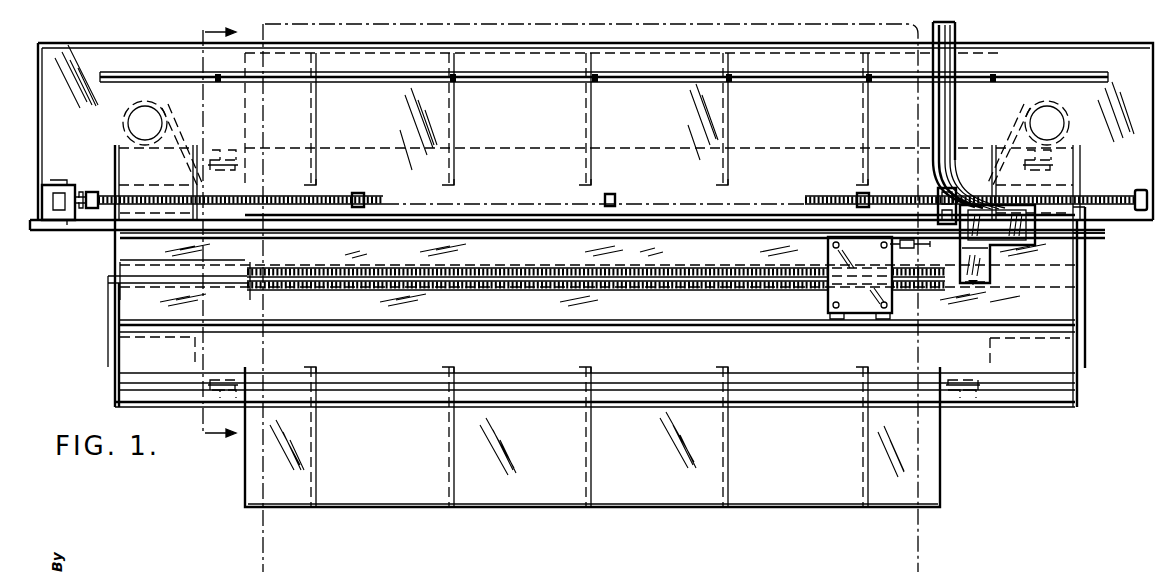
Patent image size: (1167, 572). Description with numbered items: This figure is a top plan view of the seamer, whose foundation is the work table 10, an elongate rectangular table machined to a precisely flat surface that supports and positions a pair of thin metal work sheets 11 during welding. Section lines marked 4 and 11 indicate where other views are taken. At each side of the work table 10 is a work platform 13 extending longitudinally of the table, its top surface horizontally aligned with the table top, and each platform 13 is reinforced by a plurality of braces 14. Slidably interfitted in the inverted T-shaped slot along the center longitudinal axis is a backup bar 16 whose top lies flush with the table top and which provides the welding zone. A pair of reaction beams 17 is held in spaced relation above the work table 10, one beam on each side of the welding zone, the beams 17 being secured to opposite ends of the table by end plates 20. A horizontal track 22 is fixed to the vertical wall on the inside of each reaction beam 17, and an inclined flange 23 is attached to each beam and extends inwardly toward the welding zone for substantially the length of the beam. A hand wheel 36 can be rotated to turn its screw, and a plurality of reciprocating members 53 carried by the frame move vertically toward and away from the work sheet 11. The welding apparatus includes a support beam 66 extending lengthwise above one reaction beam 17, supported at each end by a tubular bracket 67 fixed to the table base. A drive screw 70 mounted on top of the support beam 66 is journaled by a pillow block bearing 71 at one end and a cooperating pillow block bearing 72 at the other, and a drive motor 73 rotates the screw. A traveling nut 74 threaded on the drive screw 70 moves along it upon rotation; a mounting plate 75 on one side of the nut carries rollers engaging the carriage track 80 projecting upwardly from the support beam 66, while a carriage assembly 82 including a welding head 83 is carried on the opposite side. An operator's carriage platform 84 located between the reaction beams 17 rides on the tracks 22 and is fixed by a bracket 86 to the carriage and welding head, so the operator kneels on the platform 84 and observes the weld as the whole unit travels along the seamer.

The section line 4- 4 is at (209, 235).
The work table 10 is at (106, 345).
The work sheets 11 is at (263, 30).
The work platform 13 is at (360, 53).
The braces 14 is at (455, 116).
The backup bar 16 is at (108, 278).
The reaction beams 17 is at (370, 148).
The end plates 20 is at (115, 392).
The horizontal track 22 is at (745, 238).
The inclined flange 23 is at (122, 249).
The hand wheel 36 is at (222, 150).
The reciprocating members 53 is at (618, 269).
The support beam 66 is at (1066, 43).
The tubular bracket 67 is at (125, 118).
The drive screw 70 is at (352, 194).
The pillow block bearing 71 is at (1141, 190).
The pillow block bearing 72 is at (92, 192).
The drive motor 73 is at (42, 203).
The traveling nut 74 is at (938, 195).
The mounting plate 75 is at (956, 100).
The carriage track 80 is at (1018, 74).
The carriage assembly 82 is at (997, 244).
The welding head 83 is at (990, 276).
The operator's carriage platform 84 is at (860, 278).
The bracket 86 is at (914, 248).